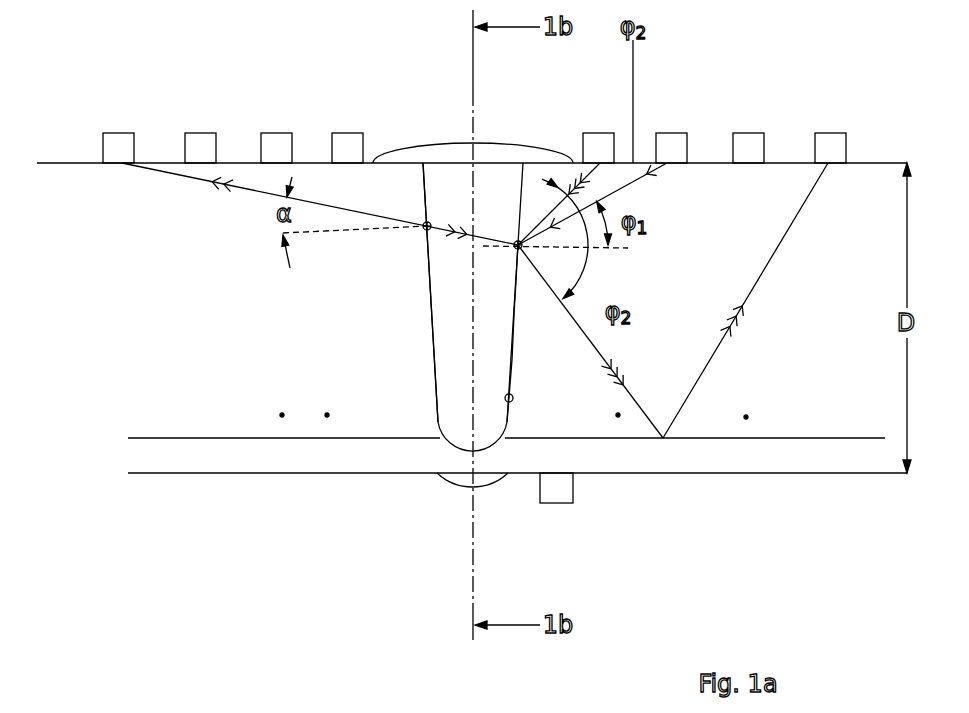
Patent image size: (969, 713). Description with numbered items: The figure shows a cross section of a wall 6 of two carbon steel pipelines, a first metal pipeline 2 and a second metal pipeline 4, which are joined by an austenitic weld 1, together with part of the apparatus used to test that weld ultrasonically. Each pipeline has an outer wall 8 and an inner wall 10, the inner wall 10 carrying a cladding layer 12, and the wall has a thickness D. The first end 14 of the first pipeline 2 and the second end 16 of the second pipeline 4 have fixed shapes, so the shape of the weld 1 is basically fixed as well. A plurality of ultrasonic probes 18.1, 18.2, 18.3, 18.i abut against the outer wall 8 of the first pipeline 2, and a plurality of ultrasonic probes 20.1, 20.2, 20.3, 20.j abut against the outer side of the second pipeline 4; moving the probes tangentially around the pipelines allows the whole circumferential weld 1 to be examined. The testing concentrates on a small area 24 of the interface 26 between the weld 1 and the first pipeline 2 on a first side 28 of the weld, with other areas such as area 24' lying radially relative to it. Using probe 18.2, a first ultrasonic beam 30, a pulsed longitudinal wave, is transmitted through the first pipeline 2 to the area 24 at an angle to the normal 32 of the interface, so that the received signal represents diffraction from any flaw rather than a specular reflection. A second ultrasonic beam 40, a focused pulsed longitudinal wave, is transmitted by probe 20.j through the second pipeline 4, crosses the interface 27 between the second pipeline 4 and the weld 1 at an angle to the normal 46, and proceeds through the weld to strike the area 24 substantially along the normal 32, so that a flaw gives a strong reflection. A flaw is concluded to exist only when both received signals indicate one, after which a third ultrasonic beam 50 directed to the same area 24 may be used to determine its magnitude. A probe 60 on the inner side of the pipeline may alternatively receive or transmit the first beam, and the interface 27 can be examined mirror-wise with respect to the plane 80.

The weld 1 is at (480, 356).
The first metal pipeline 2 is at (746, 417).
The second metal pipeline 4 is at (282, 415).
The wall 6 is at (327, 415).
The outer wall 8 is at (52, 163).
The inner wall 10 is at (168, 438).
The cladding layer 12 is at (220, 457).
The first end 14 is at (513, 340).
The second end 16 is at (433, 357).
The ultrasonic probe 18.1 is at (598, 133).
The ultrasonic probe 18.2 is at (671, 133).
The ultrasonic probe 18.3 is at (748, 133).
The ultrasonic probe 18.i is at (830, 133).
The ultrasonic probe 20.1 is at (347, 133).
The ultrasonic probe 20.2 is at (276, 133).
The ultrasonic probe 20.3 is at (200, 133).
The ultrasonic probe 20.j is at (118, 133).
The area 24 is at (501, 272).
The other area 24' is at (541, 398).
The interface 26 is at (514, 310).
The interface 27 is at (430, 308).
The first side 28 is at (512, 371).
The first ultrasonic beam 30 is at (652, 174).
The normal 32 is at (598, 250).
The second ultrasonic beam 40 is at (172, 176).
The normal 46 is at (327, 233).
The third ultrasonic beam 50 is at (548, 215).
The probe 60 is at (556, 503).
The plane 80 is at (475, 70).